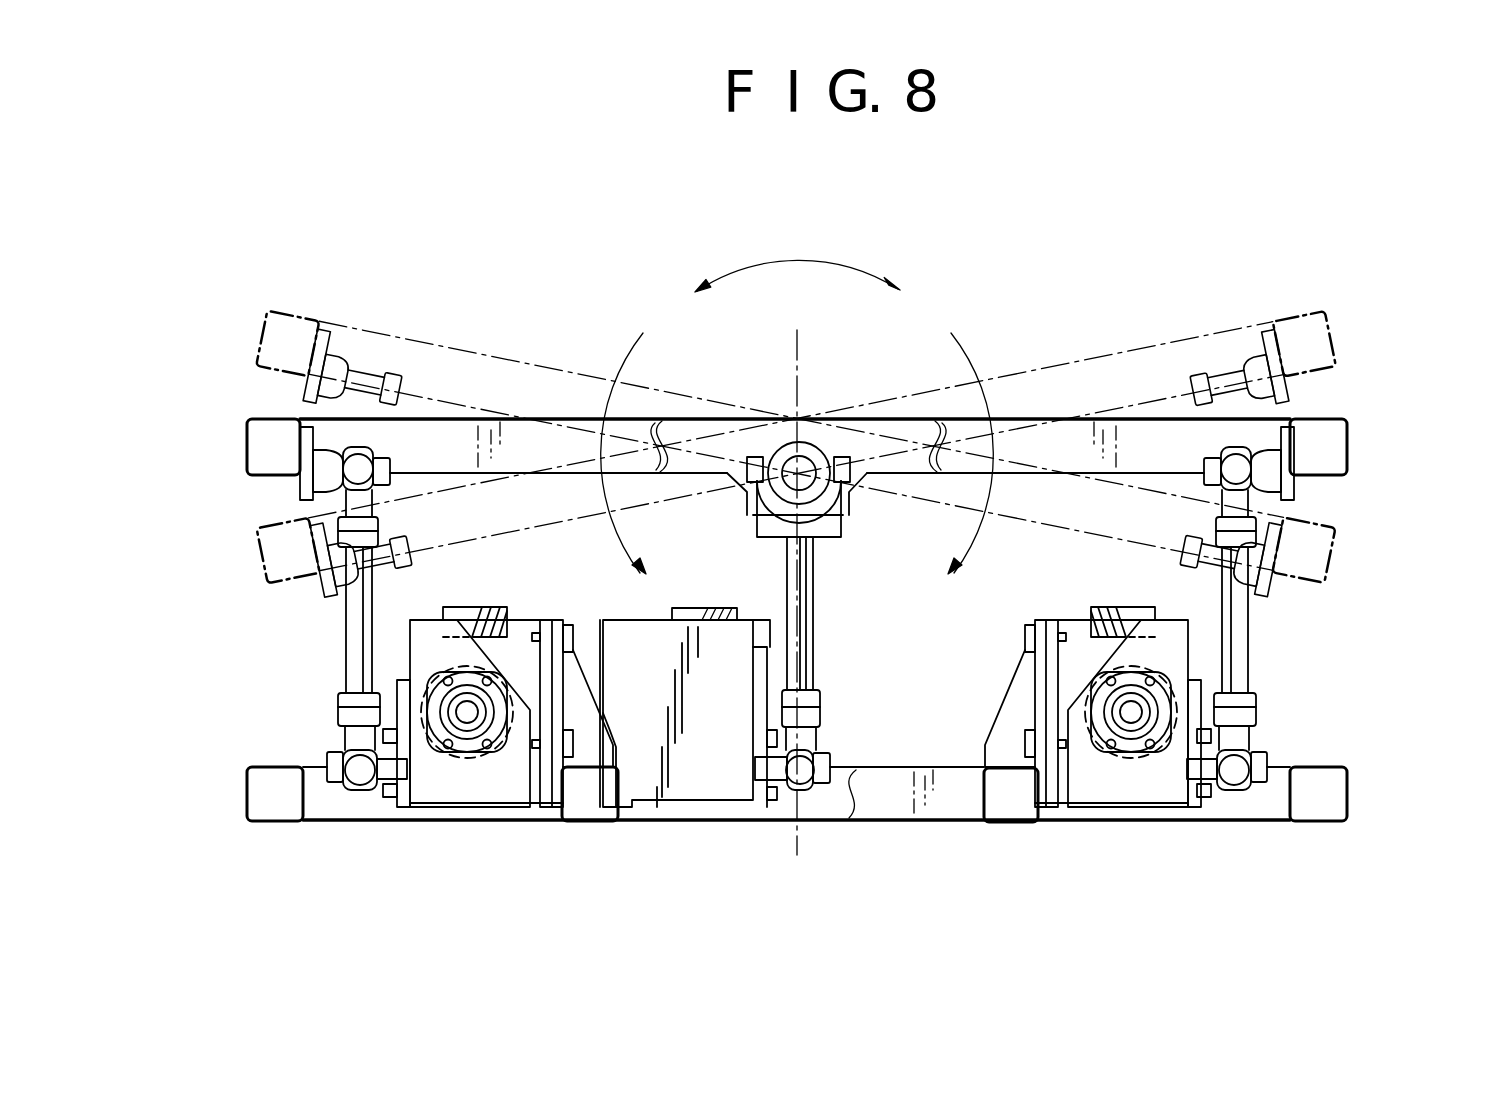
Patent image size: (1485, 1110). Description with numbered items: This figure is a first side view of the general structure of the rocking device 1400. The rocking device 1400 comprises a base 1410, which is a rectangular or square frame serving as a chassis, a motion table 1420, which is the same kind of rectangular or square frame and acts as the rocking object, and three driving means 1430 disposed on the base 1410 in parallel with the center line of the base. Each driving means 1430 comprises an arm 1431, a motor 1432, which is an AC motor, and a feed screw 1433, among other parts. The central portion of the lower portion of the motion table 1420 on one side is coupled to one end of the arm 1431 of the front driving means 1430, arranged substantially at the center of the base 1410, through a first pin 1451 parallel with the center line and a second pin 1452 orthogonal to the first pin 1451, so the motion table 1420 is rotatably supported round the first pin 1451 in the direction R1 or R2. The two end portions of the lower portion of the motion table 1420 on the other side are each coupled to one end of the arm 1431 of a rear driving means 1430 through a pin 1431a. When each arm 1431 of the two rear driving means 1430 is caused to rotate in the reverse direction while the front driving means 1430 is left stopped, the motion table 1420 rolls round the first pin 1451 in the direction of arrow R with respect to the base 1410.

The rocking device 1400 is at (452, 272).
The base 1410 is at (1336, 796).
The motion table 1420 is at (1340, 448).
The driving means 1430 is at (331, 699).
The arm 1431 is at (345, 630).
The pin 1431a is at (320, 470).
The motor 1432 is at (440, 630).
The feed screw 1433 is at (467, 712).
The first pin 1451 is at (808, 480).
The second pin 1452 is at (857, 465).